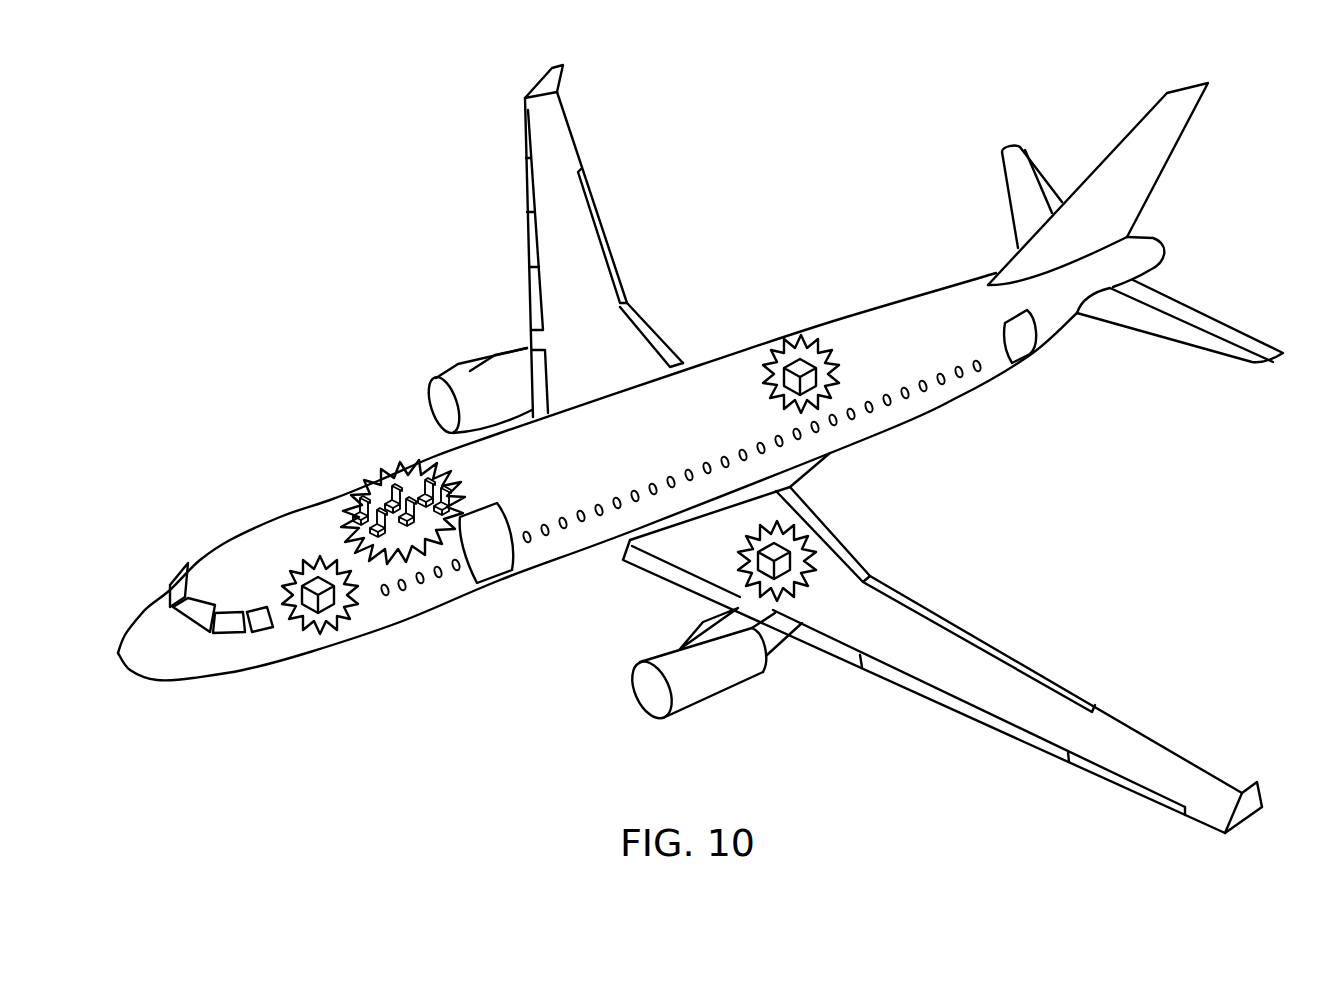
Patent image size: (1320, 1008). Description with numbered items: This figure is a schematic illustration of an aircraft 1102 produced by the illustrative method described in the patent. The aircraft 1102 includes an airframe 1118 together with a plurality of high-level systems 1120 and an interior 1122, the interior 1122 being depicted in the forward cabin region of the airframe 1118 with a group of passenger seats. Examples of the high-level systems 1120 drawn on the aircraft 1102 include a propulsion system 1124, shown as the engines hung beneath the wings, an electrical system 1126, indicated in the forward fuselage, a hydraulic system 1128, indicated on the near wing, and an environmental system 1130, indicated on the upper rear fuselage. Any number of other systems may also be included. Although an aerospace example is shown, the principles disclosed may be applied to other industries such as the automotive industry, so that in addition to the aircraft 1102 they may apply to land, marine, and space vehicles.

The aircraft 1102 is at (350, 197).
The airframe 1118 is at (358, 450).
The high-level systems 1120 is at (1047, 525).
The interior 1122 is at (367, 507).
The propulsion system 1124 is at (455, 374).
The electrical system 1126 is at (322, 584).
The hydraulic system 1128 is at (783, 548).
The environmental system 1130 is at (796, 358).